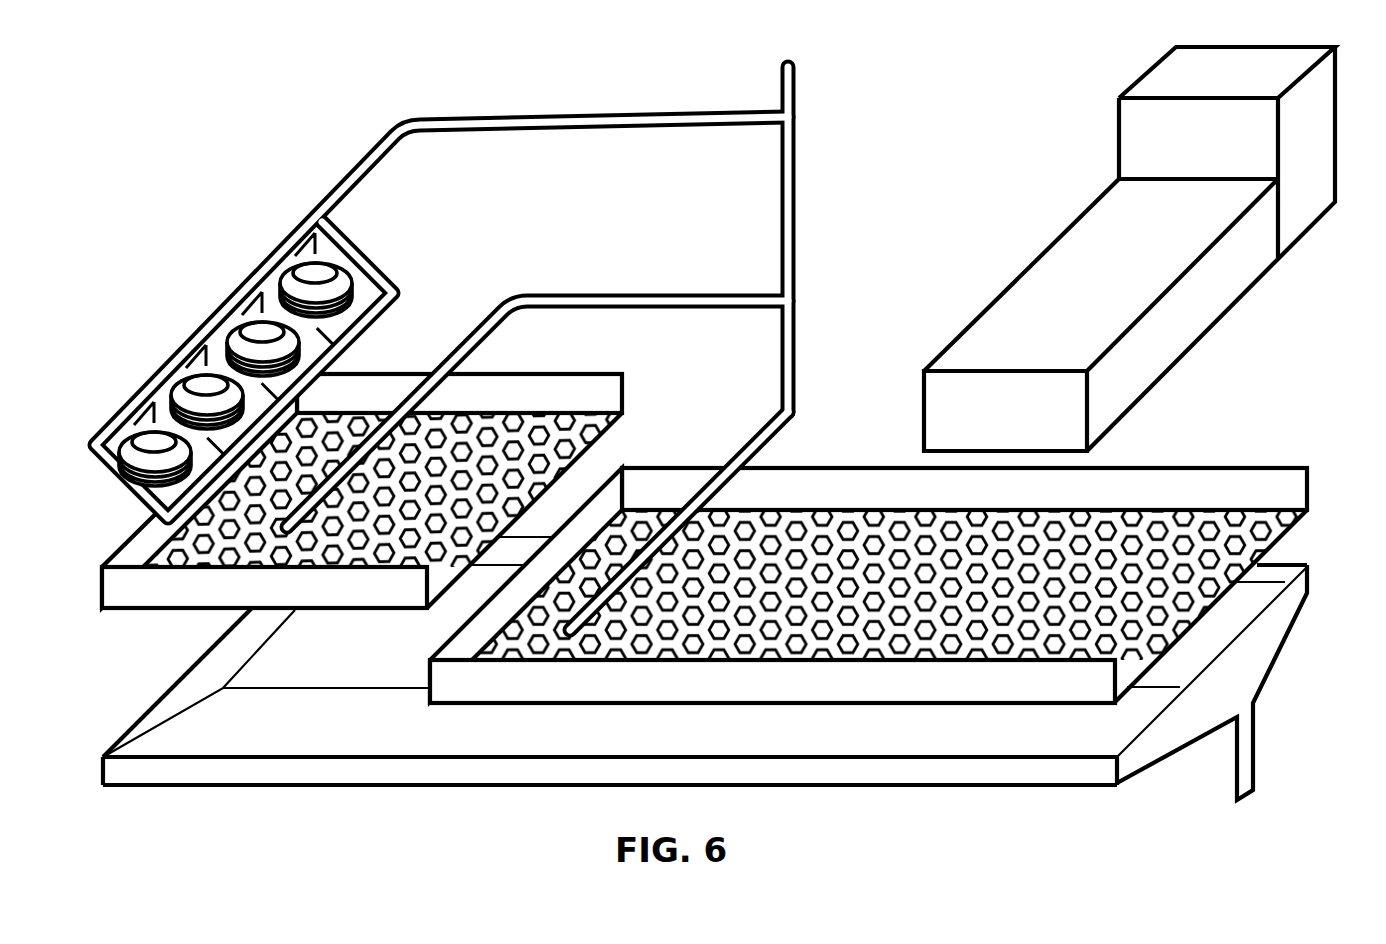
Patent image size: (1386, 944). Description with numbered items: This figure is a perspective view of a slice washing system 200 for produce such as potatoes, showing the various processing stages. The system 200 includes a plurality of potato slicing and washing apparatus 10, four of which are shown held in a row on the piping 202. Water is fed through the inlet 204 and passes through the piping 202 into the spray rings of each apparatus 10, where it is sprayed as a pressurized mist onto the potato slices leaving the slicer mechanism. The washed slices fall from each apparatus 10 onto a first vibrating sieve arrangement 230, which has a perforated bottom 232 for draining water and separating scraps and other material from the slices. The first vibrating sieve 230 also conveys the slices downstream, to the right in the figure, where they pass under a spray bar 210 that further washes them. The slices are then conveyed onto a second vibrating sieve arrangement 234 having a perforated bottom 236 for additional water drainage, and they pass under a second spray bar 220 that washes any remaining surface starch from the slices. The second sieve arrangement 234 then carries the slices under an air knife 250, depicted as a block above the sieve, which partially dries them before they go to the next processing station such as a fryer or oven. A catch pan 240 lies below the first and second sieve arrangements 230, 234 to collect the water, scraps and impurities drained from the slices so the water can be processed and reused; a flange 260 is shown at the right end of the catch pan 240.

The potato slicing and washing apparatus 10 is at (300, 265).
The system for slicing produce 200 is at (698, 444).
The piping 202 is at (350, 180).
The inlet 204 is at (785, 66).
The spray bar 210 is at (496, 303).
The second spray bar 220 is at (748, 443).
The first vibrating sieve arrangement 230 is at (117, 612).
The perforated bottom 232 is at (178, 552).
The second vibrating sieve arrangement 234 is at (1007, 708).
The perforated bottom 236 is at (938, 650).
The catch pan 240 is at (498, 789).
The air knife 250 is at (1160, 280).
The flange 260 is at (1255, 763).